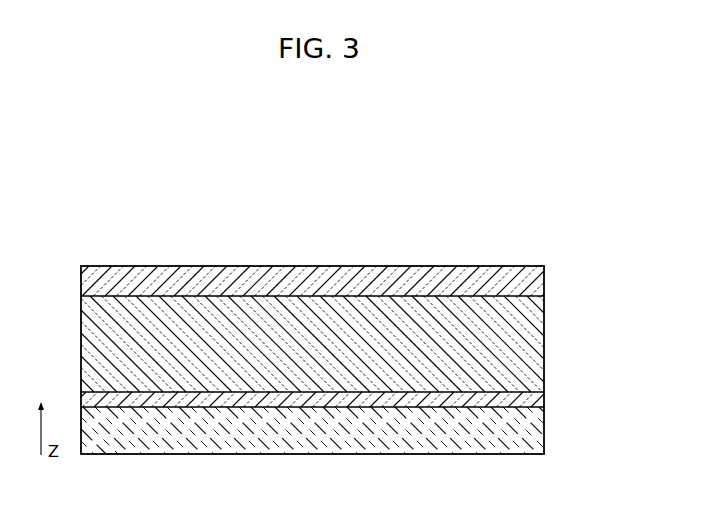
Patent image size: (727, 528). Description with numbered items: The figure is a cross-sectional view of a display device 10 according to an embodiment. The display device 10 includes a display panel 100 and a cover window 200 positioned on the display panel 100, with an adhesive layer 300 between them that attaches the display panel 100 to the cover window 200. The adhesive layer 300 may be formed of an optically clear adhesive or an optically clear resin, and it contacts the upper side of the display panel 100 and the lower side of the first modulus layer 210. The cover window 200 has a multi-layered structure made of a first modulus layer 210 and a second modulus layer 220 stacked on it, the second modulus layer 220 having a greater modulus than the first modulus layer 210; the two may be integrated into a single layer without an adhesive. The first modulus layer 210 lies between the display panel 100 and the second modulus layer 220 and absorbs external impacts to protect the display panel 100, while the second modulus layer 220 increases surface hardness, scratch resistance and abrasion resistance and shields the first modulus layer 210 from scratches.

The display device 10 is at (334, 247).
The display panel 100 is at (544, 428).
The cover window 200 is at (615, 271).
The first modulus layer 210 is at (544, 340).
The second modulus layer 220 is at (544, 282).
The adhesive layer 300 is at (544, 397).